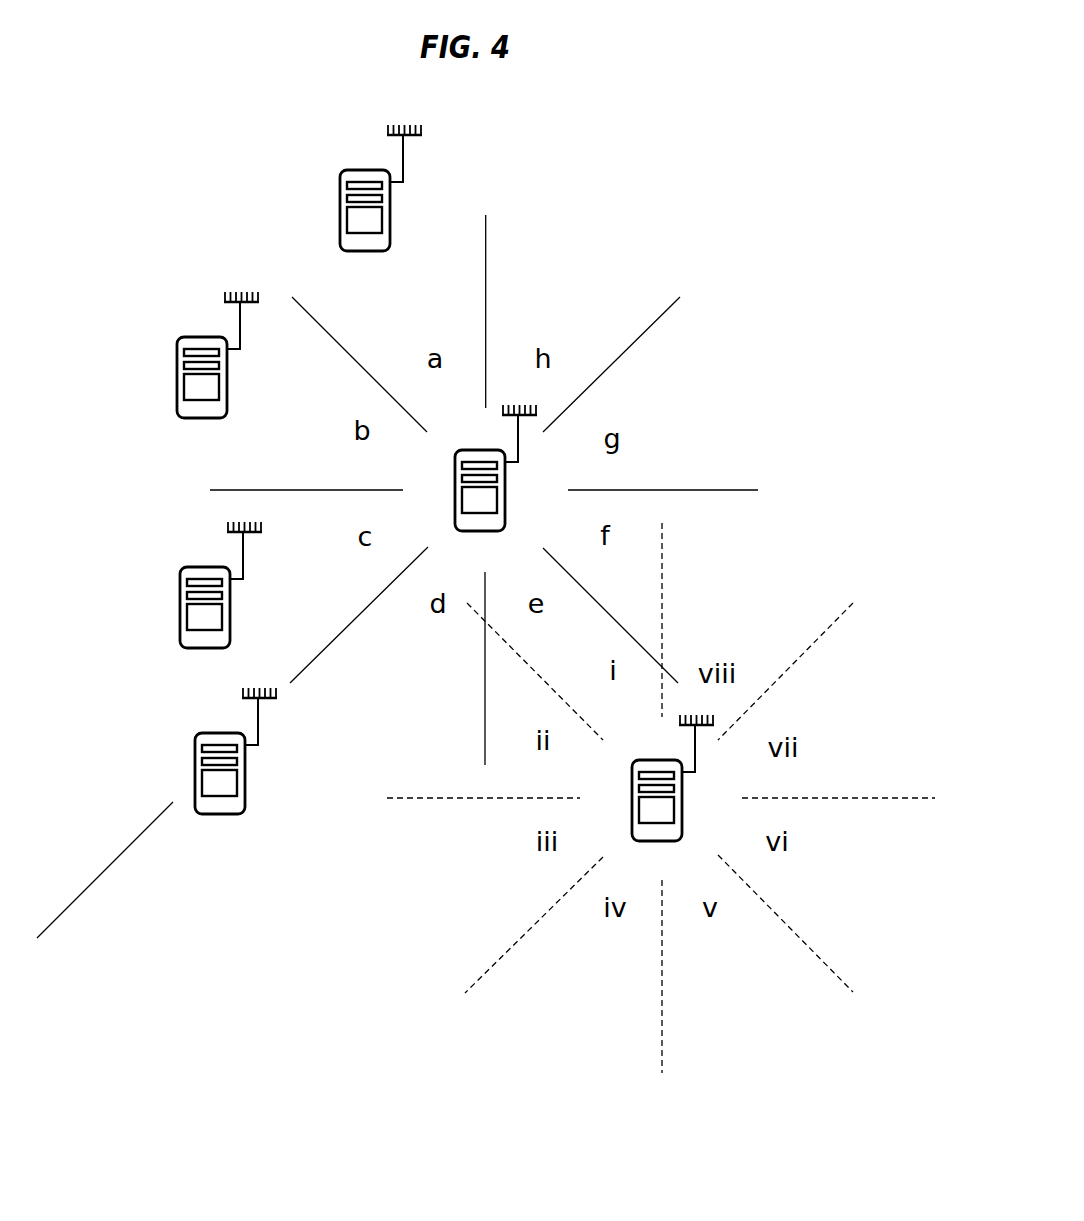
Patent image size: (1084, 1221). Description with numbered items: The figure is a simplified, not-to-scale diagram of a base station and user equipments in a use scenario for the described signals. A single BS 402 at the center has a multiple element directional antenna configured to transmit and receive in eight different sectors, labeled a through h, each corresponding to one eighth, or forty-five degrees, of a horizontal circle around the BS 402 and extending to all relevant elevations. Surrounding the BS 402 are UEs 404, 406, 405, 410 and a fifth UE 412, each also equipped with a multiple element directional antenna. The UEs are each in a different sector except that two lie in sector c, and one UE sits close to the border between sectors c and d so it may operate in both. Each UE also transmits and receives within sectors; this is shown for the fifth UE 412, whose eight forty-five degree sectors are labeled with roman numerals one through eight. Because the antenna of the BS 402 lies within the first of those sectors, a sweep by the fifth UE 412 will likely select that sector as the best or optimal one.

The base station 402 is at (505, 503).
The user equipment 404 is at (340, 206).
The wireless device 405 is at (180, 640).
The user equipment 406 is at (177, 410).
The user equipment 410 is at (195, 765).
The fifth user equipment 412 is at (684, 810).